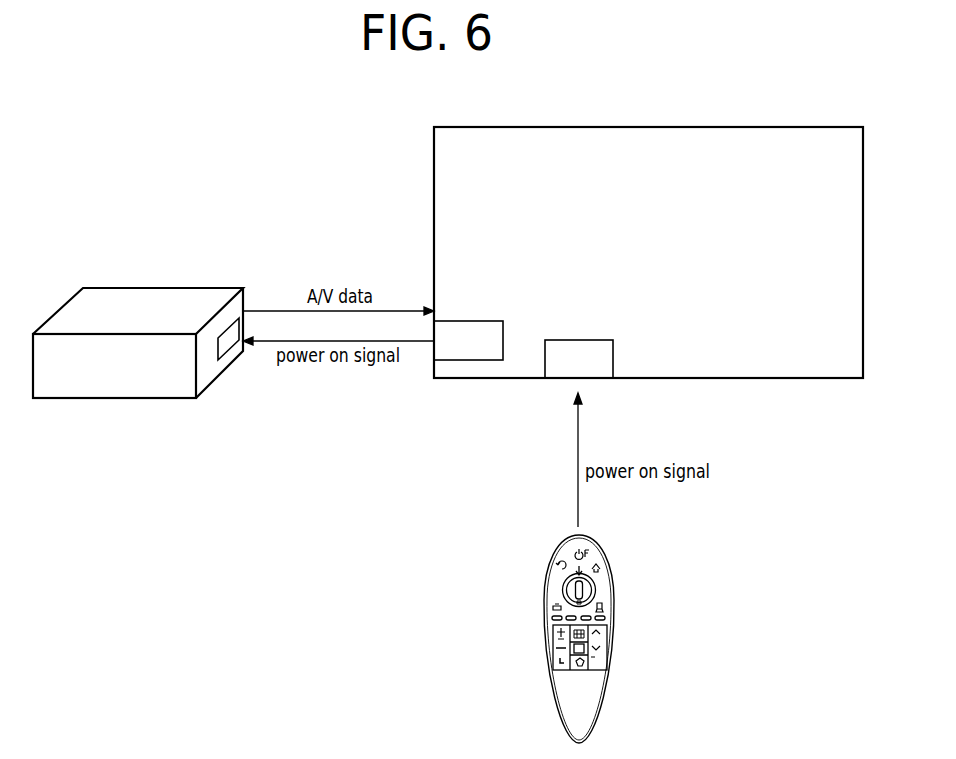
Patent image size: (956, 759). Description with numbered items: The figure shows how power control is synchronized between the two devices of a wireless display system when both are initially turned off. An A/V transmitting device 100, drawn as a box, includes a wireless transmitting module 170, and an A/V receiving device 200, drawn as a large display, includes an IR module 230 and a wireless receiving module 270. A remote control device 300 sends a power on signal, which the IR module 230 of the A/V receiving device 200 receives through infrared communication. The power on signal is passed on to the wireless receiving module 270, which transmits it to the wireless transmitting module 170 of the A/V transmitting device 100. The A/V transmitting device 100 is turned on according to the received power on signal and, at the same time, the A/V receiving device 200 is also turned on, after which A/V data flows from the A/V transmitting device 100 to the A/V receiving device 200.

The A/V transmitting device 100 is at (148, 300).
The wireless transmitting module 170 is at (227, 347).
The A/V receiving device 200 is at (640, 137).
The IR module 230 is at (613, 357).
The wireless receiving module 270 is at (464, 361).
The remote control device 300 is at (613, 598).